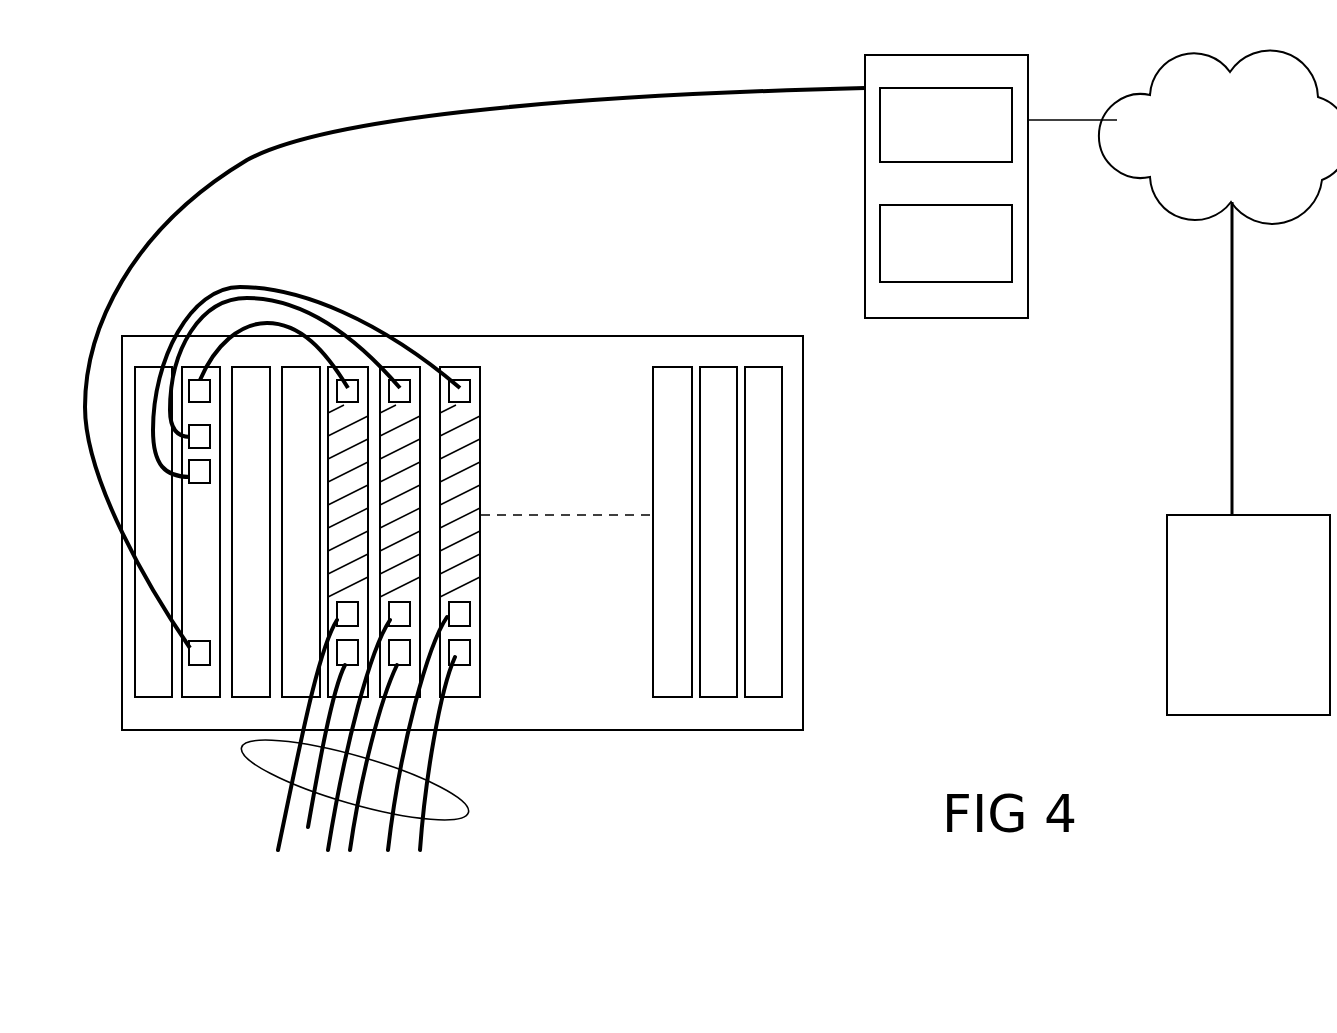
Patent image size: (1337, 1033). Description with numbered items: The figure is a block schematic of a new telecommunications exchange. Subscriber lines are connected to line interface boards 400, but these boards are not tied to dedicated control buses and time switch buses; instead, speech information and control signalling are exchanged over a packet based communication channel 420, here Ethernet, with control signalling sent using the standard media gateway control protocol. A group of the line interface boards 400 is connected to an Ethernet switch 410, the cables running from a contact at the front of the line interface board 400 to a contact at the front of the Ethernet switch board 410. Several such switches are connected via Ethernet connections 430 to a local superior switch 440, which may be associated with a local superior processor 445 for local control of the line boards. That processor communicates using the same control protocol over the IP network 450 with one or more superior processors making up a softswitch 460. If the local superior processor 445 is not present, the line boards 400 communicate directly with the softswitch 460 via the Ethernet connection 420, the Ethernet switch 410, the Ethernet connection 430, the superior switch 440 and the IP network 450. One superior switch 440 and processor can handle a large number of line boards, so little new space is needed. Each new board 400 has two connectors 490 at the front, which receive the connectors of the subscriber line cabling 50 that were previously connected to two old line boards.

The subscriber line cabling 50 is at (468, 808).
The line interface board 400 is at (481, 445).
The Ethernet switch board 410 is at (200, 688).
The packet based communication channel 420 is at (323, 300).
The Ethernet connection 430 is at (656, 96).
The local superior switch 440 is at (880, 126).
The local superior processor 445 is at (880, 237).
The IP network 450 is at (1178, 216).
The softswitch 460 is at (1167, 615).
The connectors 490 is at (481, 608).